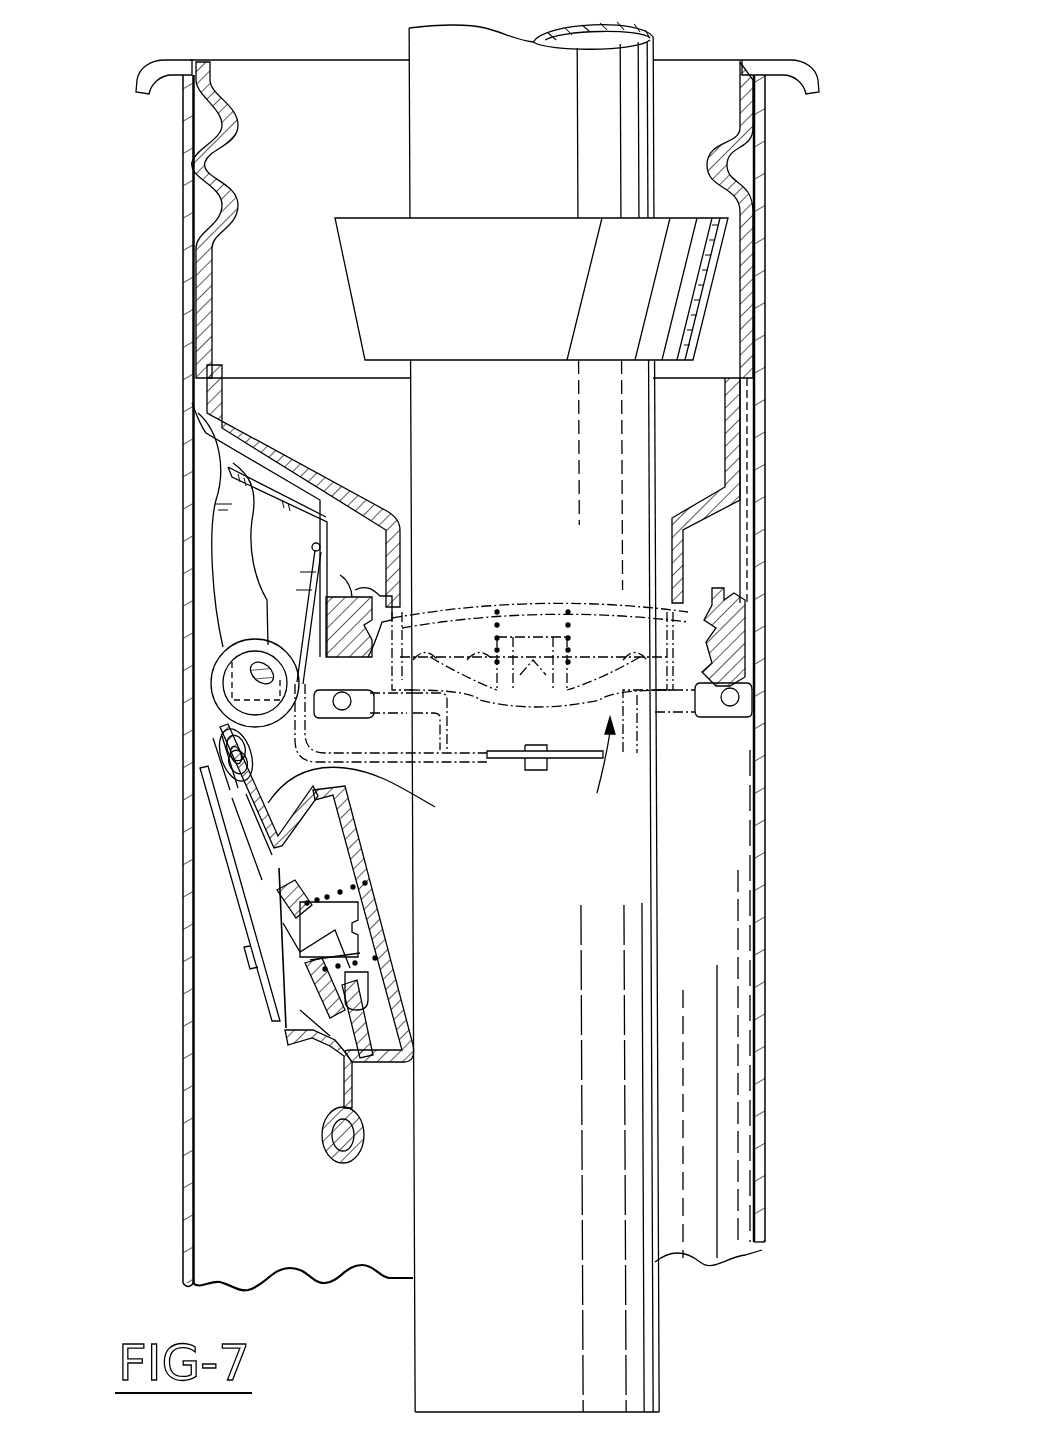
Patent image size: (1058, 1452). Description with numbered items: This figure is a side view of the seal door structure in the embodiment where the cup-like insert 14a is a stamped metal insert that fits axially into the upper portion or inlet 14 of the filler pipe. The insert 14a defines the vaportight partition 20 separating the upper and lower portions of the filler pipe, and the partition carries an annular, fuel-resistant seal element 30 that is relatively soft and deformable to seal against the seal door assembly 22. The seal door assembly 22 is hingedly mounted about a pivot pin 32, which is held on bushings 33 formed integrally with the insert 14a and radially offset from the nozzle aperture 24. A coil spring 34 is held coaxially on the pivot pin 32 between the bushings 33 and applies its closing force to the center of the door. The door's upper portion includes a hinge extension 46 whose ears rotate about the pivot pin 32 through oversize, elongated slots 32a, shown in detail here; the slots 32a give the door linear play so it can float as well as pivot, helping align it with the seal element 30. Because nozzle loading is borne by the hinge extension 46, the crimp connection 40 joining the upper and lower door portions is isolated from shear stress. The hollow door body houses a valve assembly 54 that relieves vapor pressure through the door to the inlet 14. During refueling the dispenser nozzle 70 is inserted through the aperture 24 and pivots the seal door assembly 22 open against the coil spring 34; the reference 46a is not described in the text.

The upper portion or inlet 14 is at (760, 210).
The cup-like insert 14a is at (750, 380).
The vaportight partition 20 is at (287, 468).
The seal door assembly 22 is at (288, 1080).
The nozzle aperture 24 is at (660, 570).
The annular seal element 30 is at (735, 668).
The pivot pin 32 is at (270, 648).
The elongated slots 32a is at (238, 682).
The bushings 33 is at (252, 500).
The coil spring 34 is at (217, 823).
The crimp connection 40 is at (223, 853).
The hinge extension 46 is at (207, 747).
The spring retainer frame 46a is at (375, 762).
The valve assembly 54 is at (589, 797).
The dispenser nozzle 70 is at (632, 957).